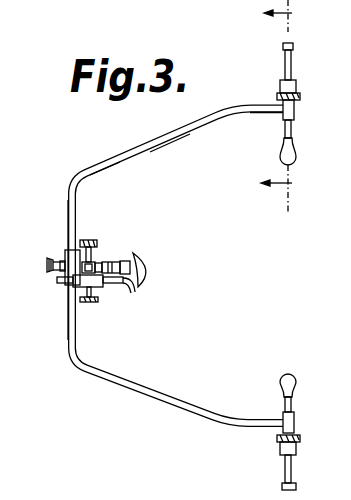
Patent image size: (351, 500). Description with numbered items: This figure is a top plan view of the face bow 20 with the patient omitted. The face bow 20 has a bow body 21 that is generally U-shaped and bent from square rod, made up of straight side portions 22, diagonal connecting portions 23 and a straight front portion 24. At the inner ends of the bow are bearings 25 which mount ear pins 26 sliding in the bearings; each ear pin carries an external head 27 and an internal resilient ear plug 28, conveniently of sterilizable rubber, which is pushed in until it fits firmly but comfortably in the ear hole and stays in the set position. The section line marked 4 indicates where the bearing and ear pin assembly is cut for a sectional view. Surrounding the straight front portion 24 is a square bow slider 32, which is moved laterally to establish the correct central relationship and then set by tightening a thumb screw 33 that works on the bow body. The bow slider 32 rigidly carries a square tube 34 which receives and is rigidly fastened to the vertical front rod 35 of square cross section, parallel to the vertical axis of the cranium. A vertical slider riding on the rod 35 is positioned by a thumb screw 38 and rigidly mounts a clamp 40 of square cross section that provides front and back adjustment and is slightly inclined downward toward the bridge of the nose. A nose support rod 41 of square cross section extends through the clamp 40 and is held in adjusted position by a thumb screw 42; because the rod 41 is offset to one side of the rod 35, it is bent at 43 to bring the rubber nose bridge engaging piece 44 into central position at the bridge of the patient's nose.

The section line 4- 4 is at (287, 106).
The face bow 20 is at (141, 146).
The bow body 21 is at (107, 169).
The straight side portions 22 is at (263, 114).
The diagonal connecting portions 23 is at (168, 142).
The straight front portion 24 is at (68, 222).
The bearings 25 is at (306, 84).
The ear pins 26 is at (295, 130).
The external heads 27 is at (294, 46).
The ear plugs 28 is at (297, 155).
The bow slider 32 is at (67, 253).
The thumb screw 33 is at (50, 265).
The square tube 34 is at (95, 263).
The vertical front rod 35 is at (97, 262).
The thumb screw 38 is at (88, 243).
The clamp 40 is at (102, 282).
The nose support rod 41 is at (62, 284).
The thumb screw 42 is at (90, 302).
The bend 43 is at (137, 292).
The nose bridge engaging piece 44 is at (152, 268).